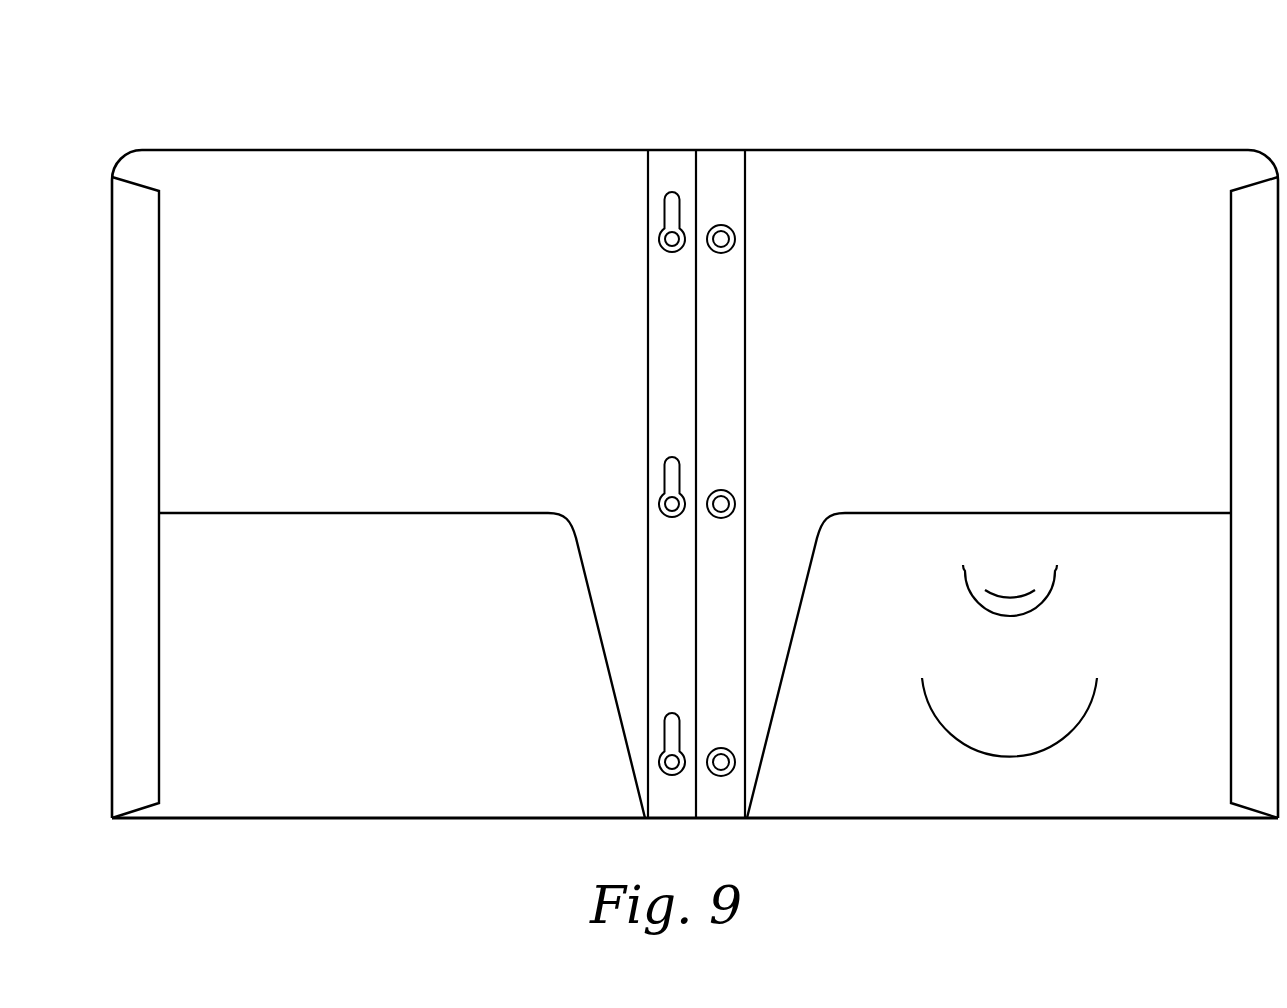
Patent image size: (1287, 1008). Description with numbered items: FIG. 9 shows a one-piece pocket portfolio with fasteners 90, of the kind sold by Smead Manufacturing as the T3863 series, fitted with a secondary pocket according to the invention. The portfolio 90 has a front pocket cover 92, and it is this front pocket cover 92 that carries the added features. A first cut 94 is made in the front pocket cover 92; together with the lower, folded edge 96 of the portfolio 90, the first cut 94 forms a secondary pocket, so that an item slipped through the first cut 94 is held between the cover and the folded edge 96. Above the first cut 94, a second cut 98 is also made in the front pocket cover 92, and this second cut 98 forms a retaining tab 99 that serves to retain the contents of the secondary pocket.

The one-piece pocket portfolio with fasteners 90 is at (951, 105).
The front pocket cover 92 is at (878, 563).
The first cut 94 is at (1093, 708).
The lower, folded edge 96 is at (1077, 820).
The second cut 98 is at (1047, 598).
The retaining tab 99 is at (995, 585).